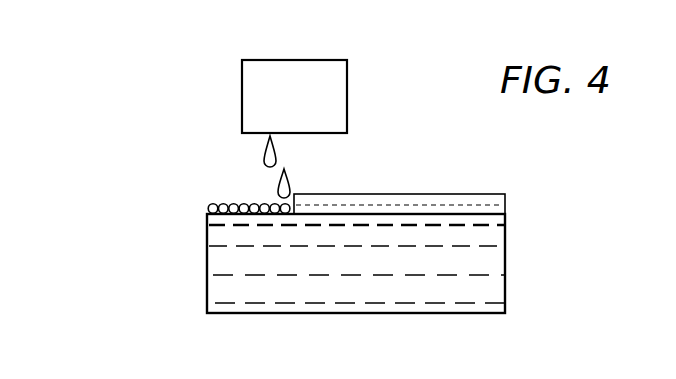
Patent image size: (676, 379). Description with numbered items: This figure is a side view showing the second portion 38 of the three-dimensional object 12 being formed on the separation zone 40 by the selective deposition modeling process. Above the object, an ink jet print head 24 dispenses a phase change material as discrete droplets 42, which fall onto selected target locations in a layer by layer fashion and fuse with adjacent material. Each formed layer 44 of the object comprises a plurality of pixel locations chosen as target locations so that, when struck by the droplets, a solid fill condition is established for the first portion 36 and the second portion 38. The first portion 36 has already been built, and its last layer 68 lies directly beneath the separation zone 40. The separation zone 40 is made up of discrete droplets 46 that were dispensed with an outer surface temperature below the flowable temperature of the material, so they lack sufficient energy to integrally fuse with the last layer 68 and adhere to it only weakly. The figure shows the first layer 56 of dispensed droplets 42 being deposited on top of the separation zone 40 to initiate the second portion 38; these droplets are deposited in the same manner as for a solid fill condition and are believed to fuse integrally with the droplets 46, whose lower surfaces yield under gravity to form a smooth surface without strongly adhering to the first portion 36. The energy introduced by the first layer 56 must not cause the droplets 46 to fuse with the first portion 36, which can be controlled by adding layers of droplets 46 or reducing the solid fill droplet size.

The three-dimensional object 12 is at (215, 81).
The ink jet print head 24 is at (347, 83).
The discrete droplets 42 is at (280, 188).
The first portion 36 is at (505, 283).
The formed layer 44 is at (207, 241).
The last layer of the first portion 68 is at (207, 222).
The discrete droplets in the separation zone 46 is at (223, 200).
The second portion 38 is at (433, 194).
The first layer 56 is at (513, 194).
The separation zone 40 is at (513, 207).